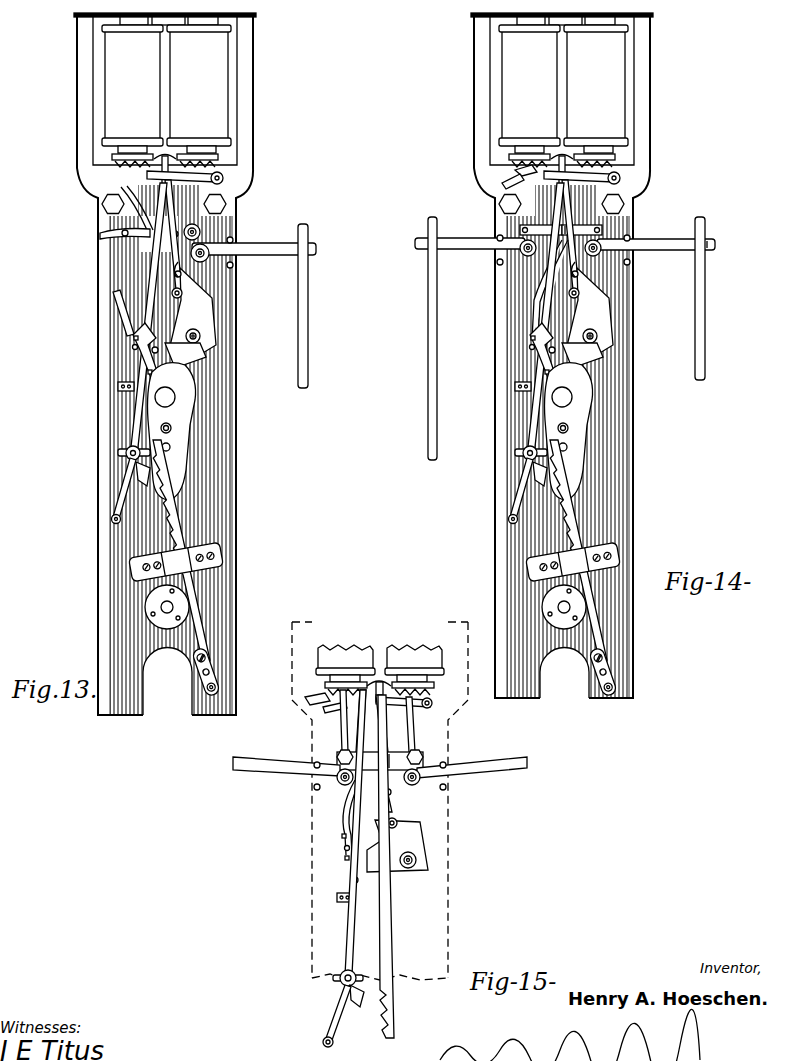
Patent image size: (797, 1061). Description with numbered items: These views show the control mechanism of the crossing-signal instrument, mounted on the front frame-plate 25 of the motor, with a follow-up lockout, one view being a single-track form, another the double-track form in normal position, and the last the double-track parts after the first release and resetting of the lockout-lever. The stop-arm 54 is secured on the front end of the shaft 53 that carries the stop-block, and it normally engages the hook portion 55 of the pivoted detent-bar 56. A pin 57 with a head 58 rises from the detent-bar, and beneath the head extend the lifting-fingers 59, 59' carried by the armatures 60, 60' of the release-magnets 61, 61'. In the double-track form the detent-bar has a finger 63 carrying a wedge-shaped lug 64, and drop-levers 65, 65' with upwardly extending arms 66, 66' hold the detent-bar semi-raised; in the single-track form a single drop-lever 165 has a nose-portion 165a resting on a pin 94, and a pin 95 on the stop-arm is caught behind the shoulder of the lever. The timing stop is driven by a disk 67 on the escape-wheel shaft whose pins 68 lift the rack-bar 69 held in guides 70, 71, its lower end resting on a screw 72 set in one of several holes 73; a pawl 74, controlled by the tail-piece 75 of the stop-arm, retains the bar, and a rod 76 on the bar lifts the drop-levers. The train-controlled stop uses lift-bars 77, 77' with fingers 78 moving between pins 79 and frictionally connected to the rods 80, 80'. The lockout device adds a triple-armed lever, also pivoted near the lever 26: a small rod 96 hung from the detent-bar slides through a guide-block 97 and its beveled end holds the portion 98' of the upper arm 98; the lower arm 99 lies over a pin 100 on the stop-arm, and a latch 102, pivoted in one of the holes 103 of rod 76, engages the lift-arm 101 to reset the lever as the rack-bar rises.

In FIG. 13, the frame plate 25 is at (237, 452).
In FIG. 14, the frame plate 25 is at (568, 355).
In FIG. 13, the lever 26 is at (172, 431).
In FIG. 14, the lever 26 is at (569, 431).
In FIG. 13, the shaft 53 is at (126, 455).
In FIG. 14, the shaft 53 is at (508, 467).
In FIG. 15, the shaft 53 is at (341, 985).
In FIG. 13, the stop-arm 54 is at (148, 319).
In FIG. 14, the stop-arm 54 is at (545, 319).
In FIG. 15, the stop-arm 54 is at (355, 832).
In FIG. 15, the hook portion 55 is at (364, 721).
In FIG. 13, the detent-bar 56 is at (198, 181).
In FIG. 14, the detent-bar 56 is at (590, 180).
In FIG. 15, the detent-bar 56 is at (430, 700).
In FIG. 15, the pin 57 is at (388, 723).
In FIG. 13, the head 58 is at (170, 157).
In FIG. 14, the head 58 is at (574, 153).
In FIG. 15, the head 58 is at (380, 680).
In FIG. 13, the lifting-finger 59 is at (214, 173).
In FIG. 14, the lifting-finger 59 is at (616, 158).
In FIG. 15, the lifting-finger 59 is at (409, 672).
In FIG. 13, the lifting-finger 59' is at (114, 173).
In FIG. 14, the lifting-finger 59' is at (533, 143).
In FIG. 15, the lifting-finger 59' is at (351, 672).
In FIG. 13, the armature 60 is at (215, 151).
In FIG. 14, the armature 60 is at (598, 140).
In FIG. 15, the armature 60 is at (416, 668).
In FIG. 13, the armature 60' is at (113, 157).
In FIG. 14, the armature 60' is at (528, 140).
In FIG. 15, the armature 60' is at (343, 668).
In FIG. 13, the release-magnet 61 is at (199, 85).
In FIG. 14, the release-magnet 61 is at (596, 85).
In FIG. 15, the release-magnet 61 is at (414, 649).
In FIG. 13, the release-magnet 61' is at (132, 85).
In FIG. 14, the release-magnet 61' is at (529, 85).
In FIG. 15, the release-magnet 61' is at (345, 649).
In FIG. 14, the finger 63 is at (508, 171).
In FIG. 15, the finger 63 is at (322, 698).
In FIG. 14, the wedge-shaped lug 64 is at (493, 191).
In FIG. 15, the wedge-shaped lug 64 is at (326, 713).
In FIG. 14, the drop-lever 65 is at (582, 230).
In FIG. 15, the drop-lever 65 is at (401, 760).
In FIG. 14, the drop-lever 65' is at (541, 230).
In FIG. 15, the drop-lever 65' is at (358, 753).
In FIG. 14, the upwardly extending arm 66 is at (613, 204).
In FIG. 15, the upwardly extending arm 66 is at (420, 724).
In FIG. 14, the upwardly extending arm 66' is at (510, 204).
In FIG. 15, the upwardly extending arm 66' is at (330, 721).
In FIG. 13, the disk 67 is at (167, 650).
In FIG. 14, the disk 67 is at (564, 670).
In FIG. 13, the pins 68 is at (177, 617).
In FIG. 14, the pins 68 is at (527, 607).
In FIG. 13, the rack-bar 69 is at (170, 527).
In FIG. 14, the rack-bar 69 is at (575, 550).
In FIG. 15, the rack-bar 69 is at (378, 966).
In FIG. 13, the guide 70 is at (176, 562).
In FIG. 14, the guide 70 is at (573, 562).
In FIG. 13, the guide 71 is at (120, 391).
In FIG. 14, the guide 71 is at (498, 410).
In FIG. 15, the guide 71 is at (340, 903).
In FIG. 13, the screw 72 is at (212, 660).
In FIG. 14, the screw 72 is at (592, 672).
In FIG. 13, the holes 73 is at (213, 690).
In FIG. 14, the holes 73 is at (630, 673).
In FIG. 13, the pawl 74 is at (123, 503).
In FIG. 14, the pawl 74 is at (501, 491).
In FIG. 15, the pawl 74 is at (336, 1012).
In FIG. 13, the tail-piece 75 is at (138, 472).
In FIG. 14, the tail-piece 75 is at (508, 481).
In FIG. 15, the tail-piece 75 is at (355, 996).
In FIG. 13, the rod 76 is at (116, 300).
In FIG. 14, the rod 76 is at (550, 290).
In FIG. 15, the rod 76 is at (353, 813).
In FIG. 13, the lift-bar 77 is at (253, 252).
In FIG. 14, the lift-bar 77 is at (650, 247).
In FIG. 15, the lift-bar 77 is at (465, 771).
In FIG. 14, the lift-bar 77' is at (475, 247).
In FIG. 15, the lift-bar 77' is at (293, 771).
In FIG. 13, the finger 78 is at (181, 272).
In FIG. 14, the finger 78 is at (605, 274).
In FIG. 15, the finger 78 is at (393, 787).
In FIG. 13, the pins 79 is at (236, 244).
In FIG. 14, the pins 79 is at (566, 248).
In FIG. 15, the pins 79 is at (314, 787).
In FIG. 13, the rod 80 is at (318, 306).
In FIG. 14, the rod 80 is at (712, 298).
In FIG. 14, the rod 80' is at (418, 338).
In FIG. 13, the pin 94 is at (122, 236).
In FIG. 13, the pin 95 is at (170, 238).
In FIG. 13, the small rod 96 is at (160, 183).
In FIG. 14, the small rod 96 is at (570, 235).
In FIG. 15, the small rod 96 is at (392, 800).
In FIG. 13, the guide-block 97 is at (186, 296).
In FIG. 14, the guide-block 97 is at (608, 291).
In FIG. 15, the guide-block 97 is at (388, 821).
In FIG. 13, the upper arm 98 is at (218, 315).
In FIG. 14, the upper arm 98 is at (614, 315).
In FIG. 15, the upper arm 98 is at (404, 846).
In FIG. 13, the portion 98' is at (233, 317).
In FIG. 14, the portion 98' is at (630, 313).
In FIG. 15, the portion 98' is at (389, 837).
In FIG. 13, the lower arm 99 is at (197, 352).
In FIG. 14, the lower arm 99 is at (612, 360).
In FIG. 15, the lower arm 99 is at (381, 865).
In FIG. 13, the pin 100 is at (167, 338).
In FIG. 14, the pin 100 is at (609, 369).
In FIG. 15, the pin 100 is at (353, 881).
In FIG. 13, the lift-arm 101 is at (143, 330).
In FIG. 14, the lift-arm 101 is at (508, 353).
In FIG. 15, the lift-arm 101 is at (370, 844).
In FIG. 13, the latch 102 is at (133, 349).
In FIG. 14, the latch 102 is at (497, 348).
In FIG. 15, the latch 102 is at (345, 849).
In FIG. 13, the holes 103 is at (136, 340).
In FIG. 14, the holes 103 is at (504, 361).
In FIG. 15, the holes 103 is at (342, 836).
In FIG. 13, the drop-lever 165 is at (126, 202).
In FIG. 13, the nose-portion 165a is at (100, 236).